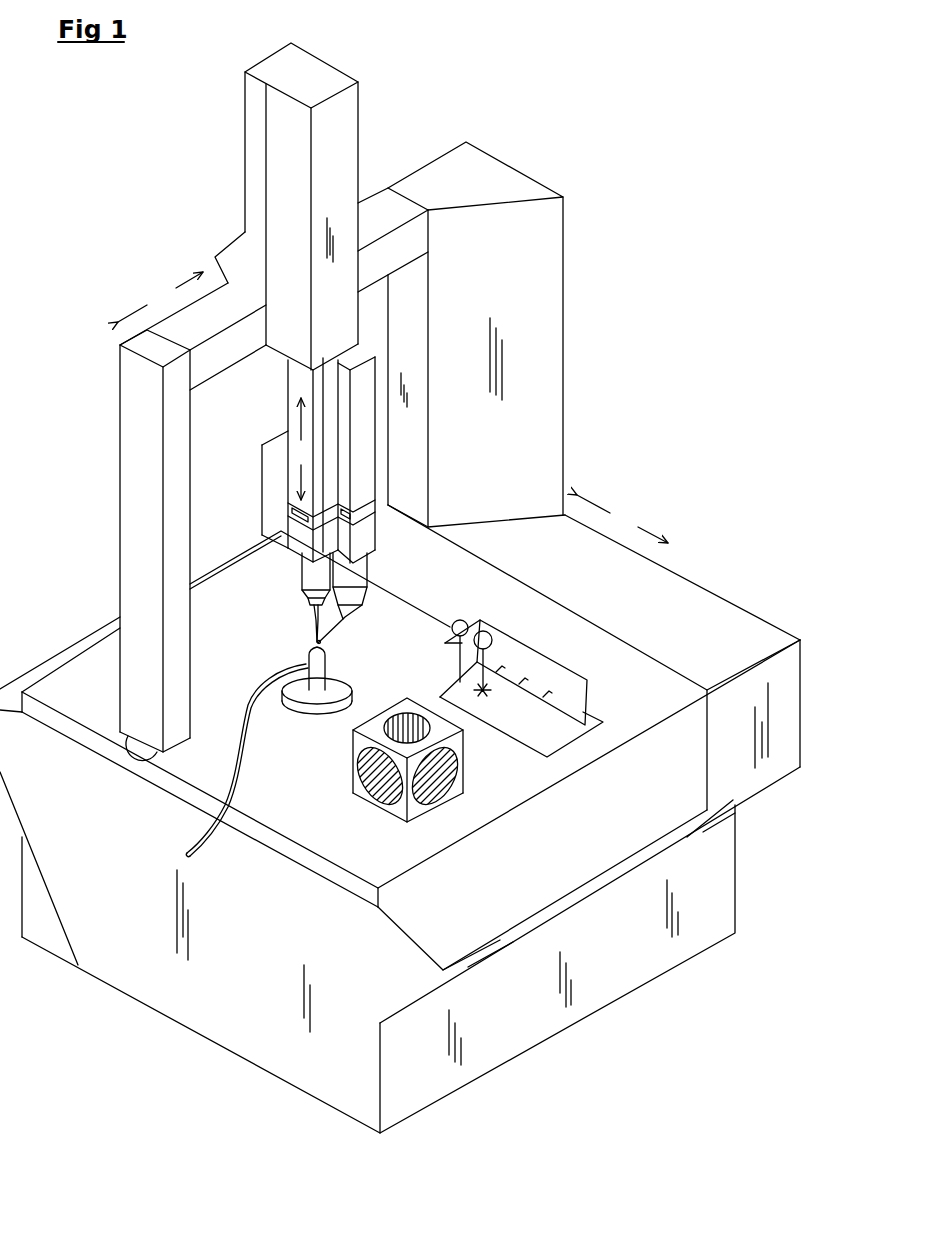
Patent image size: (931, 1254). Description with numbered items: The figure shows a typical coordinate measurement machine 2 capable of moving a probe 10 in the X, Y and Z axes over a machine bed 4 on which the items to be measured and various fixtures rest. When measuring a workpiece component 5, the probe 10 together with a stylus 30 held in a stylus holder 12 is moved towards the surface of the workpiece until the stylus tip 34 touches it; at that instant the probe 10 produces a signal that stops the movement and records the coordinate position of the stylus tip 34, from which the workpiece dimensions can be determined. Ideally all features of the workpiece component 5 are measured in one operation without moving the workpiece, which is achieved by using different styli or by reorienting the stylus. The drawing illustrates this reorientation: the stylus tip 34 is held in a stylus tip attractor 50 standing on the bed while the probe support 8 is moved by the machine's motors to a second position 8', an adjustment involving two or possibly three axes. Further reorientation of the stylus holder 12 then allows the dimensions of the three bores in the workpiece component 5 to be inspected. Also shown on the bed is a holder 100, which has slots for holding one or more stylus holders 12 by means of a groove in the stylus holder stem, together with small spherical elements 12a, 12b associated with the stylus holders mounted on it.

The coordinate measurement machine 2 is at (176, 240).
The machine bed 4 is at (87, 709).
The workpiece component 5 is at (397, 807).
The probe support 8 is at (292, 460).
The probe support in second position 8' is at (406, 460).
The probe 10 is at (306, 570).
The stylus holder 12 is at (310, 600).
The calibration sphere 12a is at (455, 620).
The calibration sphere 12b is at (492, 635).
The stylus 30 is at (347, 631).
The stylus tip 34 is at (338, 648).
The stylus tip attractor 50 is at (330, 712).
The holder 100 is at (560, 741).